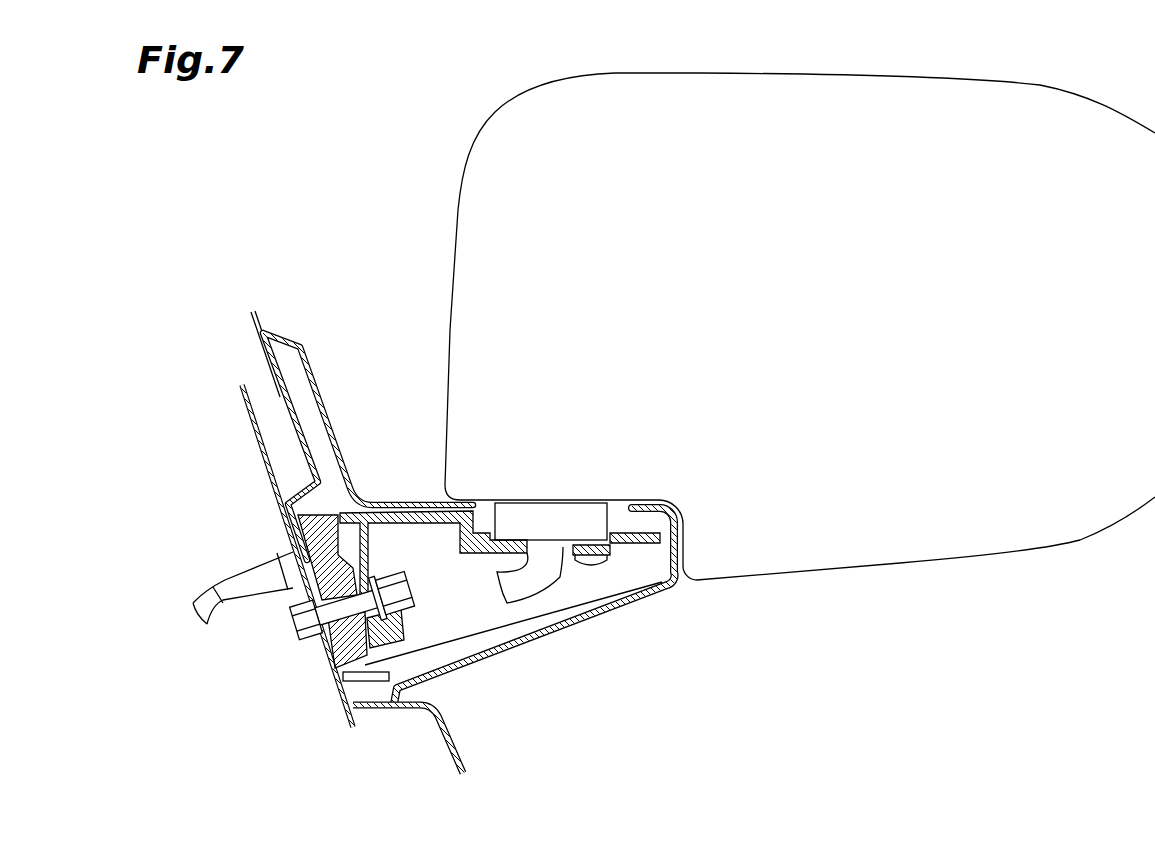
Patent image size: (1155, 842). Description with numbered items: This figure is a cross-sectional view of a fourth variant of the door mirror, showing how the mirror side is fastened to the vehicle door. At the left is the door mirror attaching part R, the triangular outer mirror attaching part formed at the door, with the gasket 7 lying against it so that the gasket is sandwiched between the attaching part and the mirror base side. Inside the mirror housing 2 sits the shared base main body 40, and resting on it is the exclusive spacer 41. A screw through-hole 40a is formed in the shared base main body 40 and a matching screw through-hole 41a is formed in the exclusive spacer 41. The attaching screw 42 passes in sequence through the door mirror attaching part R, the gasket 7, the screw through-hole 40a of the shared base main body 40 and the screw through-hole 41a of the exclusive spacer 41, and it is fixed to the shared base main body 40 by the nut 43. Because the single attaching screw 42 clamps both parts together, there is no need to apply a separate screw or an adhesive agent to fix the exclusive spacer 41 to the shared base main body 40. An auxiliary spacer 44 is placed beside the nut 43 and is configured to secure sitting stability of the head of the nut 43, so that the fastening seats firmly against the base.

The mirror housing 2 is at (977, 562).
The gasket 7 is at (291, 405).
The door mirror attaching part R is at (260, 455).
The shared base main body 40 is at (503, 627).
The screw through-hole 40a is at (340, 698).
The exclusive spacer 41 is at (314, 558).
The screw through-hole 41a is at (333, 653).
The attaching screw 42 is at (298, 637).
The nut 43 is at (410, 610).
The auxiliary spacer 44 is at (400, 617).